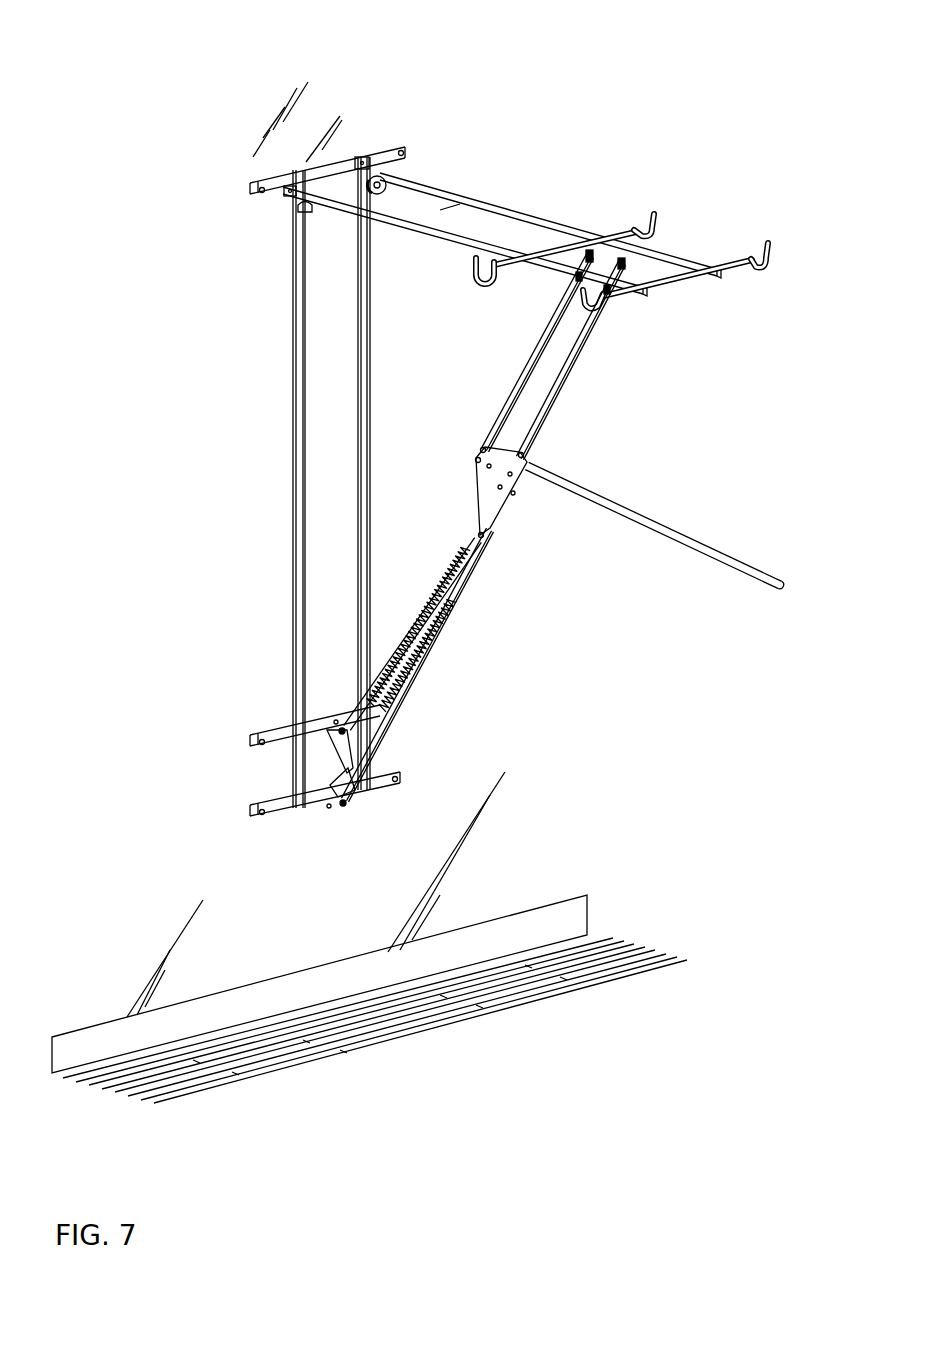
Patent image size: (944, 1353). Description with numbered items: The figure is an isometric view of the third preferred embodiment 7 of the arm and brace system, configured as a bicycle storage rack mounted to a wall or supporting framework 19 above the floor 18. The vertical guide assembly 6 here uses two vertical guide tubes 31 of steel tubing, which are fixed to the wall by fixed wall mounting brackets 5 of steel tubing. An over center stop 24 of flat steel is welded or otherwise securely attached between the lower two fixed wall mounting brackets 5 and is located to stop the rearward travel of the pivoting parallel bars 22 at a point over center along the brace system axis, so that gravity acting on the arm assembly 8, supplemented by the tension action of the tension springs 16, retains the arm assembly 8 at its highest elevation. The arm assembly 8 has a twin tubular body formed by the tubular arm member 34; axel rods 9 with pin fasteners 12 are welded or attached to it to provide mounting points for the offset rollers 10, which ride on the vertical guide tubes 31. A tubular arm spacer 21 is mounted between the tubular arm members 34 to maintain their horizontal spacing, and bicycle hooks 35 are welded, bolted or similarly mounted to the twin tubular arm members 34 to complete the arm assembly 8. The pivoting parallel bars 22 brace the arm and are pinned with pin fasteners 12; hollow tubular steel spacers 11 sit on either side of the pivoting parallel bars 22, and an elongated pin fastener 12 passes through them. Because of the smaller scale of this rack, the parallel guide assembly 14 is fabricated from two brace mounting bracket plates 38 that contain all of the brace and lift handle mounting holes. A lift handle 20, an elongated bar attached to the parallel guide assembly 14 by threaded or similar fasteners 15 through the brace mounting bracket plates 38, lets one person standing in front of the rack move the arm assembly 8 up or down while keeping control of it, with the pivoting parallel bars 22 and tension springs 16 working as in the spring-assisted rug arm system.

The fixed wall mounting brackets 5 is at (250, 190).
The vertical guide assembly 6 is at (262, 459).
The third preferred embodiment 7 is at (818, 80).
The arm assembly 8 is at (492, 171).
The axel rods 9 is at (378, 170).
The offset rollers 10 is at (349, 158).
The hollow tubular steel spacers 11 is at (568, 256).
The pin fasteners 12 is at (620, 262).
The parallel guide assembly 14 is at (524, 541).
The fasteners 15 is at (510, 474).
The tension springs 16 is at (440, 640).
The floor 18 is at (270, 1073).
The wall or supporting framework 19 is at (178, 932).
The lift handle 20 is at (757, 573).
The tubular arm spacer 21 is at (425, 200).
The pivoting parallel bars 22 is at (523, 378).
The over center stop 24 is at (340, 780).
The vertical guide tubes 31 is at (365, 357).
The tubular arm member 34 is at (456, 213).
The bicycle hooks 35 is at (760, 272).
The brace mounting bracket plates 38 is at (500, 487).